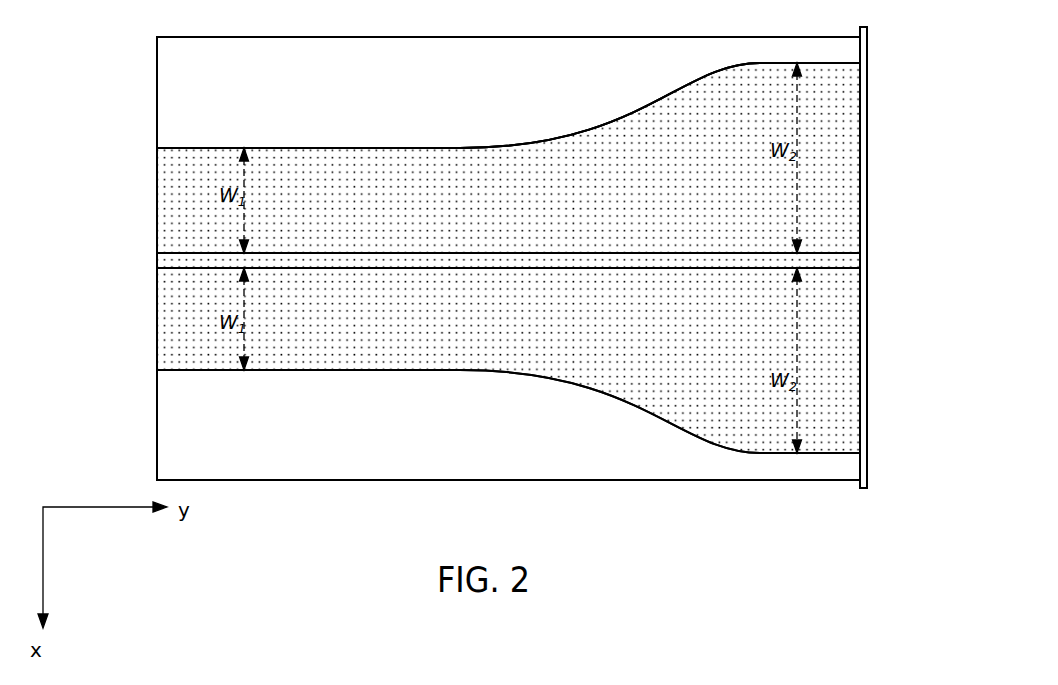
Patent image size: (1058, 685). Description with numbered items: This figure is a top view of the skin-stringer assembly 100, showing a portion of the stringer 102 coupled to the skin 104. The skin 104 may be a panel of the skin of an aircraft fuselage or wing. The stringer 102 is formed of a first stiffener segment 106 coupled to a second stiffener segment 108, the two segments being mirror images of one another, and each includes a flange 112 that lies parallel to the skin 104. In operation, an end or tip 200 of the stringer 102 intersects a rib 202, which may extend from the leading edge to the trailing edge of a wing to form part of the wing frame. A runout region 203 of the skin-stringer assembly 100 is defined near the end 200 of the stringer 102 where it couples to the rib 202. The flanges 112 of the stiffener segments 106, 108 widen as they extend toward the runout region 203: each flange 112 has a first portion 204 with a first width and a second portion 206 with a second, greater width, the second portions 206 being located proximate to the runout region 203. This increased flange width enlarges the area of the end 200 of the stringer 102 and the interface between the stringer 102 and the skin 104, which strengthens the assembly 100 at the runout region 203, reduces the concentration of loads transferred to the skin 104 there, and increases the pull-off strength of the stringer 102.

The skin-stringer assembly 100 is at (465, 258).
The stringer 102 is at (214, 239).
The skin 104 is at (508, 54).
The first stiffener segment 106 is at (308, 126).
The second stiffener segment 108 is at (508, 450).
The flange 112 is at (610, 258).
The end or tip of the stringer 200 is at (538, 163).
The rib 202 is at (903, 251).
The runout region 203 is at (610, 94).
The first portion of the flange 204 is at (508, 258).
The second portion of the flange 206 is at (753, 258).